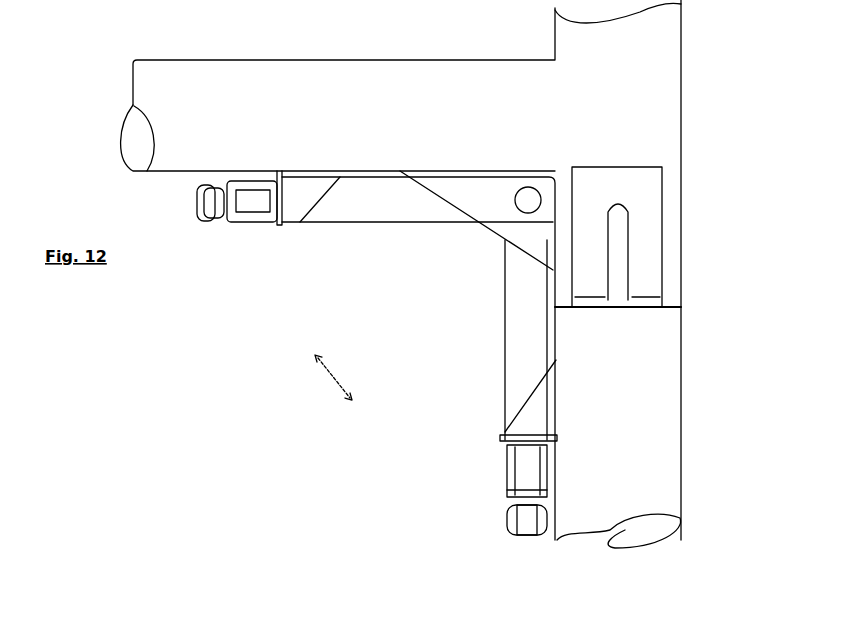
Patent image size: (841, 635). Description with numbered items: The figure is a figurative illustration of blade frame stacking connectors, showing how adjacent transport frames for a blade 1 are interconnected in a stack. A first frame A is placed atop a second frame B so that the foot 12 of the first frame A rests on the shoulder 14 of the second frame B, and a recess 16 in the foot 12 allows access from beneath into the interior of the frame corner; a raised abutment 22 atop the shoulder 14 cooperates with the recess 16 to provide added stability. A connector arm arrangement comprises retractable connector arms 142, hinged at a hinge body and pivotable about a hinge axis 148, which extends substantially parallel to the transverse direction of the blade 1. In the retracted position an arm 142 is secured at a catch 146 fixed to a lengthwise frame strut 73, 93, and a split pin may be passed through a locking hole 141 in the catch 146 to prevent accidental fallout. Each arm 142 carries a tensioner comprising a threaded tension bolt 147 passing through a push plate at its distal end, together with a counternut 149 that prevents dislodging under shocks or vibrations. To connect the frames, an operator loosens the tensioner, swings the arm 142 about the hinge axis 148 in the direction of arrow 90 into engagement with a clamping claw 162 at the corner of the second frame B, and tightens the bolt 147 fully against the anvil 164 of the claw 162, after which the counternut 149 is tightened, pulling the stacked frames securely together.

The lengthwise strut 73 is at (331, 79).
The lengthwise strut 93 is at (401, 87).
The first frame A is at (655, 80).
The second frame B is at (658, 462).
The catch 146 is at (290, 208).
The locking hole 141 is at (266, 238).
The tension bolt 147 is at (212, 204).
The hinge axis 148 is at (528, 204).
The recess 16 is at (647, 183).
The raised abutment 22 is at (627, 295).
The shoulder 14 is at (674, 296).
The frame foot 12 is at (673, 316).
The connector arm 142 is at (514, 308).
The blade 1 is at (575, 280).
The clamping claw 162 is at (505, 437).
The anvil 164 is at (508, 443).
The counternut 149 is at (515, 503).
The arrow 90 is at (334, 385).